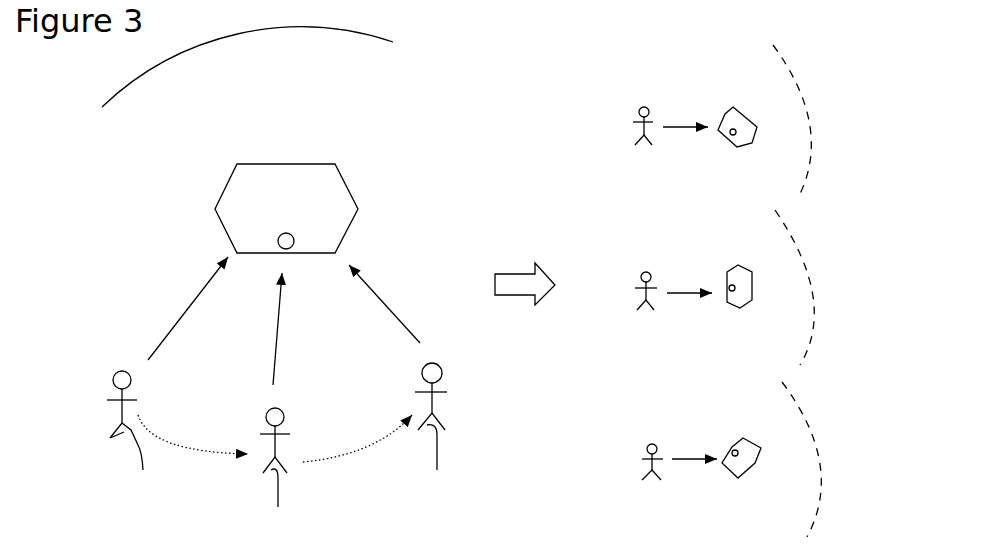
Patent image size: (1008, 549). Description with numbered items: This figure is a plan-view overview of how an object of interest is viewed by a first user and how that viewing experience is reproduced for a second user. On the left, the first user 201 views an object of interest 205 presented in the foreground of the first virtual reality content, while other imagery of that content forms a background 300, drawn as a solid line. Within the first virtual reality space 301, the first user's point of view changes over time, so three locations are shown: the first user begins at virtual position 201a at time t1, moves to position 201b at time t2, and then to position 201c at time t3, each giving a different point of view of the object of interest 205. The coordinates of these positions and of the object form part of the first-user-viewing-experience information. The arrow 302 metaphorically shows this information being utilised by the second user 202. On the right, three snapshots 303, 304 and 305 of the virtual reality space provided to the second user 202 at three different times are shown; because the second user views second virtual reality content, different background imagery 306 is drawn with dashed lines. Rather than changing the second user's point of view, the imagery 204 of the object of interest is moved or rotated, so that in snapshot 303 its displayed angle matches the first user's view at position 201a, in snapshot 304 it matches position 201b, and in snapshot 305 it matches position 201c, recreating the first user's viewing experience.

The background 300 is at (160, 64).
The first virtual reality space 301 is at (117, 245).
The arrow 302 is at (523, 287).
The snapshot 303 is at (632, 102).
The snapshot 304 is at (640, 262).
The snapshot 305 is at (645, 435).
The background imagery 306 is at (810, 138).
The first user 201 is at (238, 450).
The virtual position 201a is at (145, 435).
The virtual position 201b is at (283, 473).
The virtual position 201c is at (441, 432).
The second user 202 is at (633, 135).
The imagery of the object of interest 204 is at (747, 146).
The object of interest 205 is at (253, 207).